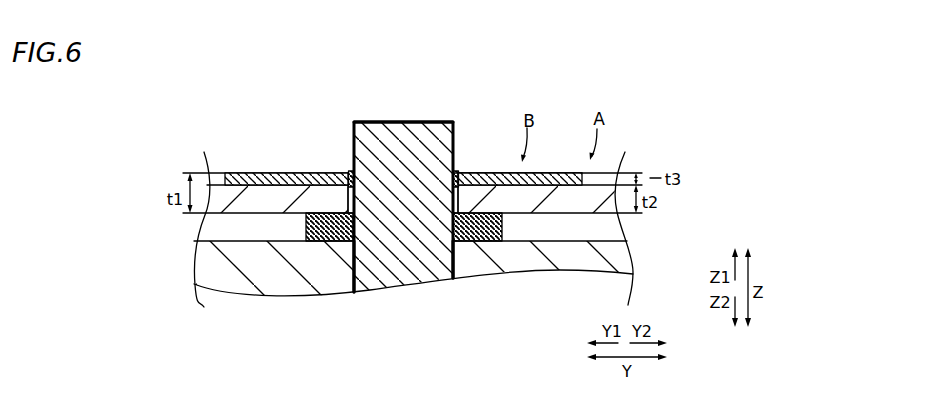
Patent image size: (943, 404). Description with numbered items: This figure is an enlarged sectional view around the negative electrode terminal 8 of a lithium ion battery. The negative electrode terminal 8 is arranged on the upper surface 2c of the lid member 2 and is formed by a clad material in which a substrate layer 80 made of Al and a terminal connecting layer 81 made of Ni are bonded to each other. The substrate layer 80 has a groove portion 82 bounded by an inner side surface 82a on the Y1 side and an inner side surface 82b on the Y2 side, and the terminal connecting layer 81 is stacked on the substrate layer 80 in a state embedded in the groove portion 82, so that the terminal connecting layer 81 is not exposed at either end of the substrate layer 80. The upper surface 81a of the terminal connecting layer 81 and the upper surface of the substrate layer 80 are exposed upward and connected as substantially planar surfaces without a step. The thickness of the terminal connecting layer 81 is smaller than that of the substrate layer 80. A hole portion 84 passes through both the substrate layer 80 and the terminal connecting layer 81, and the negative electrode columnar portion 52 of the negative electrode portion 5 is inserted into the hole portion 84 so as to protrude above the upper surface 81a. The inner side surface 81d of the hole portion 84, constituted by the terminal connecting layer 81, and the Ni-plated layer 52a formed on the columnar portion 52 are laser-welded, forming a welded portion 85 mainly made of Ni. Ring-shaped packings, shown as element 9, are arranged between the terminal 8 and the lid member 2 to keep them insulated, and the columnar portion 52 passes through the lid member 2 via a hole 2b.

The substrate layer 80 is at (268, 203).
The negative electrode terminal 8 is at (613, 146).
The terminal connecting layer 81 is at (288, 173).
The upper surface of terminal connecting layer 81a is at (492, 173).
The inner side surface of hole portion 81d is at (431, 124).
The hole portion 84 is at (442, 205).
The groove portion 82 is at (392, 130).
The inner side surface of groove portion on Y1 side 82a is at (242, 173).
The inner side surface of groove portion on Y2 side 82b is at (563, 173).
The welded portion 85 is at (350, 171).
The negative electrode portion 5 is at (417, 248).
The negative electrode columnar portion 52 is at (400, 256).
The Ni-plated layer 52a is at (453, 262).
The lid member 2 is at (537, 263).
The through hole of housing 2b is at (355, 263).
The upper surface of lid member 2c is at (207, 229).
The adhesive layer 9 is at (328, 228).